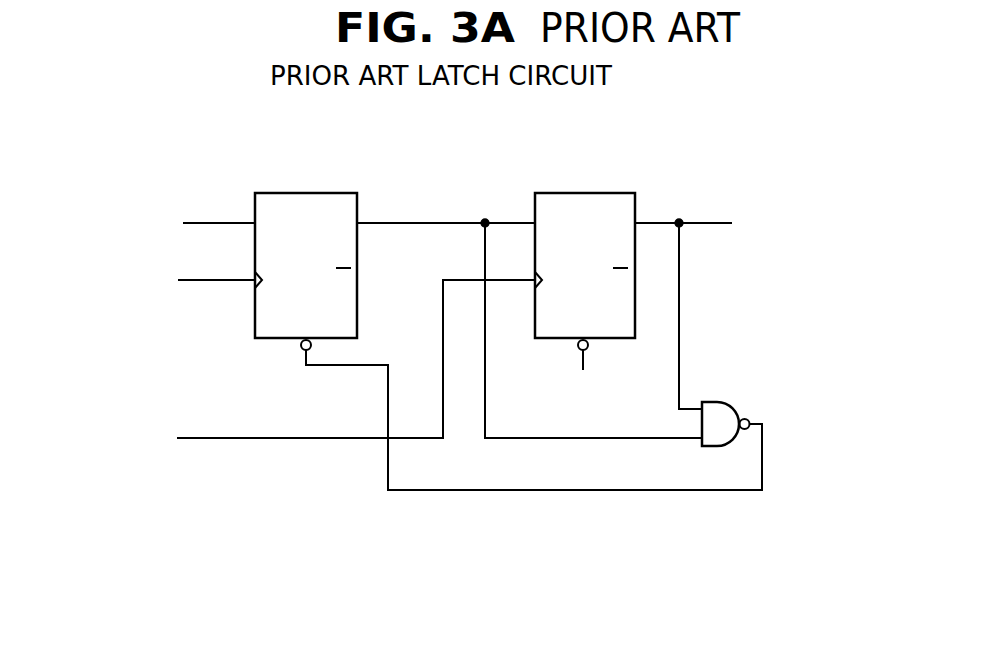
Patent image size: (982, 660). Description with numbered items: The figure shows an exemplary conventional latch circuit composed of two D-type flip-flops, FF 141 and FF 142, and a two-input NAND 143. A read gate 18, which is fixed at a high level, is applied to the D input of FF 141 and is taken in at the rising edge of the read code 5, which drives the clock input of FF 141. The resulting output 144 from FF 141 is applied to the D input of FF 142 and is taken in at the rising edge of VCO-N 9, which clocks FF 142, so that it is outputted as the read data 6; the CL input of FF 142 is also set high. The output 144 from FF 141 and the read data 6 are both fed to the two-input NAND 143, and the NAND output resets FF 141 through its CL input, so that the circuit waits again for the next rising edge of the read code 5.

The read gate 18 is at (137, 202).
The read code 5 is at (92, 295).
The D-type flip-flop FF 141 is at (318, 180).
The D-type flip-flop FF 142 is at (592, 180).
The output from FF 141 144 is at (403, 222).
The read data 6 is at (770, 205).
The VCO-N 9 is at (158, 408).
The two-input NAND 143 is at (723, 400).